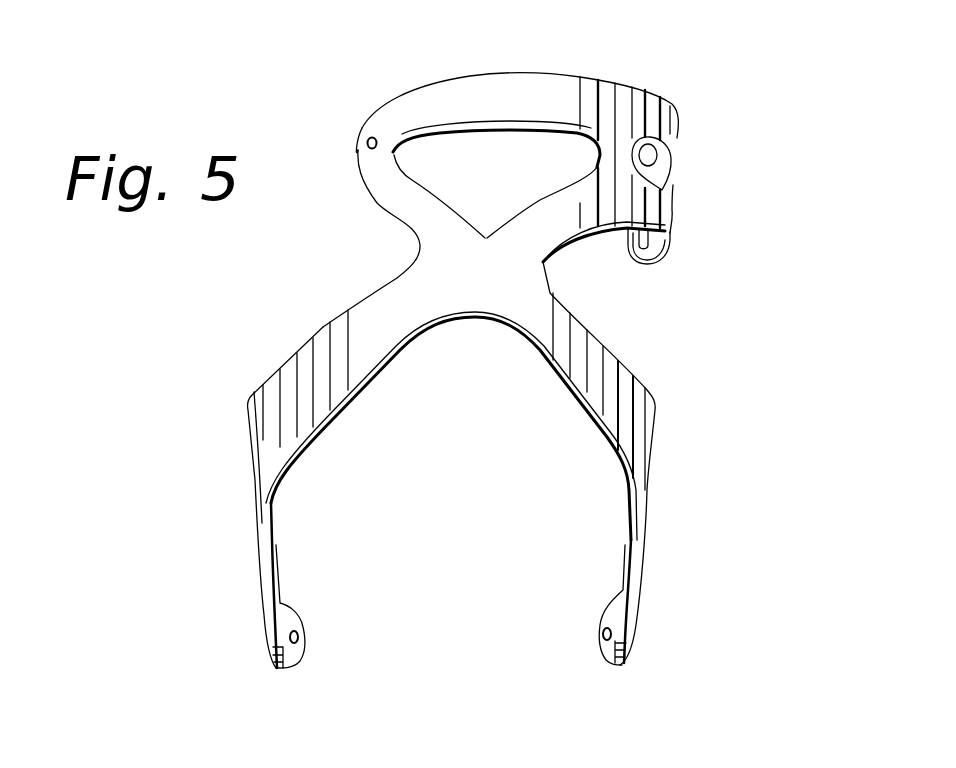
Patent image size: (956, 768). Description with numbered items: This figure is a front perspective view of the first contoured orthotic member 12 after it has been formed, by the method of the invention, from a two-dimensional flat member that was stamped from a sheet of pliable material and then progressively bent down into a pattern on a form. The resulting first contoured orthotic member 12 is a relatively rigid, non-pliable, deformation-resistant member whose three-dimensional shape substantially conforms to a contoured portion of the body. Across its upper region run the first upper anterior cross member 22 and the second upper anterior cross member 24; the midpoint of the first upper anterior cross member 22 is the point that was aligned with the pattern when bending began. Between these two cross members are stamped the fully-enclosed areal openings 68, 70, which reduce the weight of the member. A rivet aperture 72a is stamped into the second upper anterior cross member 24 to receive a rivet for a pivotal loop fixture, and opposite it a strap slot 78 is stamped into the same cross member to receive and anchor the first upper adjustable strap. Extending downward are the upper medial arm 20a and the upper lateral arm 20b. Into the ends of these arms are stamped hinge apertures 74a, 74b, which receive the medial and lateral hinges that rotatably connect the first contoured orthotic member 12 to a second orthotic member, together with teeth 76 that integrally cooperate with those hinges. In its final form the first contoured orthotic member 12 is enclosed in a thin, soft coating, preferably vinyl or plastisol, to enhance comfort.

The first contoured orthotic member 12 is at (677, 330).
The upper medial arm 20a is at (275, 413).
The upper lateral arm 20b is at (633, 412).
The first upper anterior cross member 22 is at (498, 286).
The second upper anterior cross member 24 is at (520, 85).
The areal opening 68 is at (463, 151).
The areal opening 70 is at (659, 167).
The rivet aperture 72a is at (367, 143).
The hinge aperture 74a is at (299, 636).
The hinge aperture 74b is at (603, 633).
The teeth 76 is at (281, 663).
The strap slot 78 is at (651, 148).